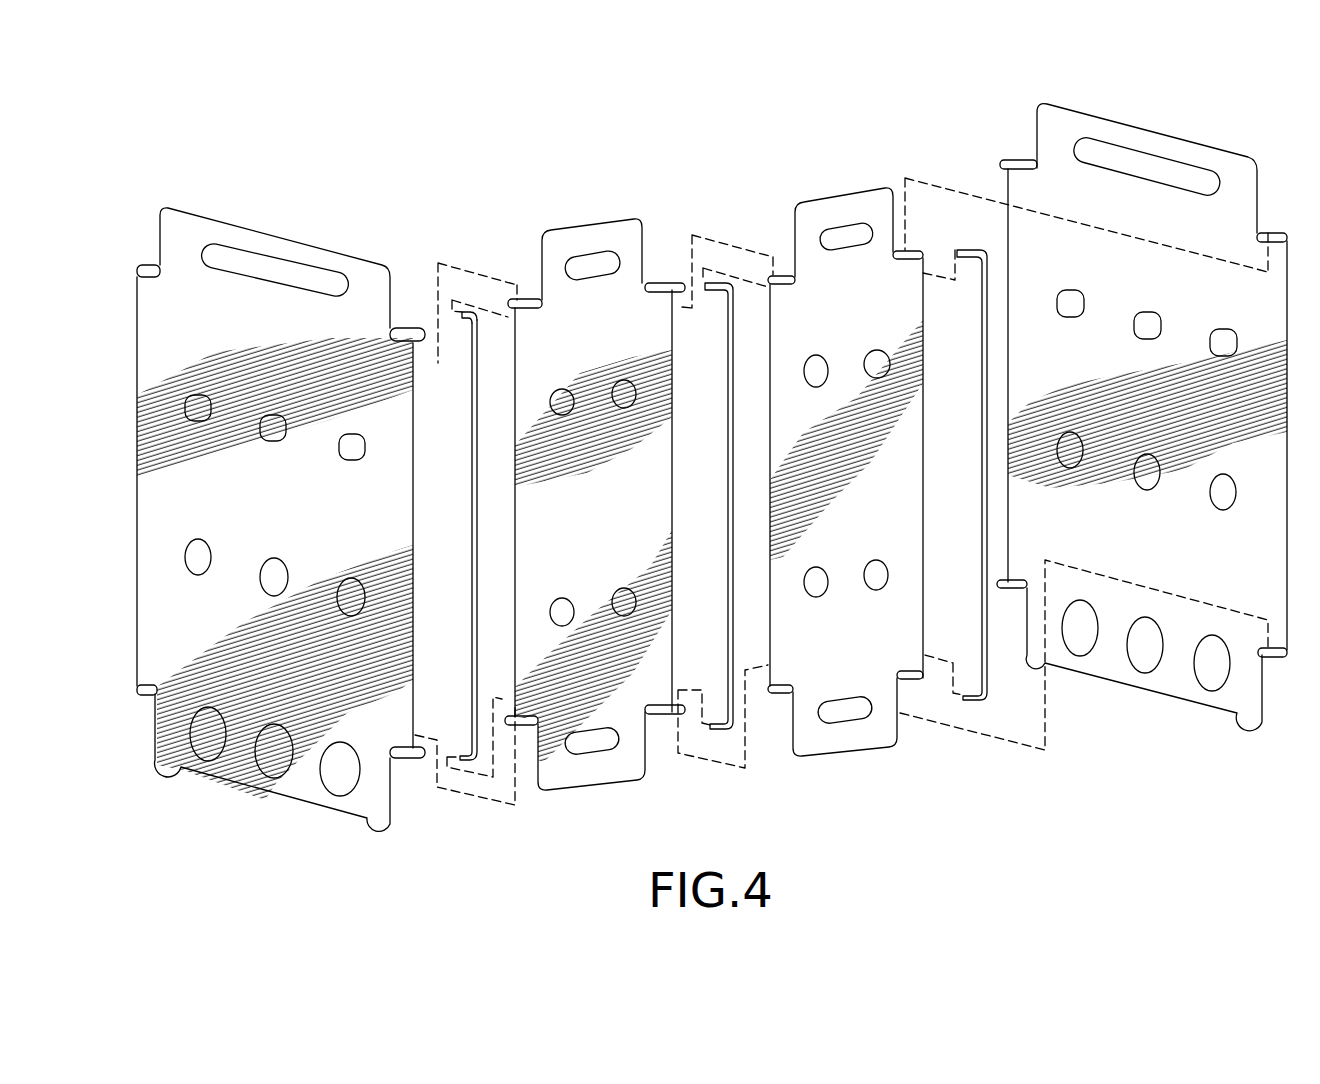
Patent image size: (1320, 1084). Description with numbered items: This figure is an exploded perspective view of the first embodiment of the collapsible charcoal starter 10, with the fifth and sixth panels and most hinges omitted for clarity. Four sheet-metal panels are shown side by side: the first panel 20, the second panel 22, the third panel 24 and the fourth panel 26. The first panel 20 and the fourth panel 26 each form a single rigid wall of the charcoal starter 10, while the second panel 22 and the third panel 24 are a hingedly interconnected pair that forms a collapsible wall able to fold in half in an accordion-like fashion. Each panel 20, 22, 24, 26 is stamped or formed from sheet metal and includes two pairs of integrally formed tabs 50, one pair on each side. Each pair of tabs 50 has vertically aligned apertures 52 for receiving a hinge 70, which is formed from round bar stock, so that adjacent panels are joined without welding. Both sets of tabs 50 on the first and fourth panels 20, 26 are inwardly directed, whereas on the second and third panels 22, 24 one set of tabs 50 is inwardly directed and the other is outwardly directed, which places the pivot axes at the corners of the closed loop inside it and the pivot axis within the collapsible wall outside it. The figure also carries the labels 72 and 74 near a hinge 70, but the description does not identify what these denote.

The charcoal starter 10 is at (330, 159).
The first panel 20 is at (262, 384).
The second panel 22 is at (613, 356).
The third panel 24 is at (865, 317).
The fourth panel 26 is at (1132, 284).
The tab 50 is at (1003, 160).
The aperture 52 is at (398, 333).
The hinge 70 is at (485, 483).
The gasket side leg 72 is at (472, 414).
The gasket end portion 74 is at (467, 314).